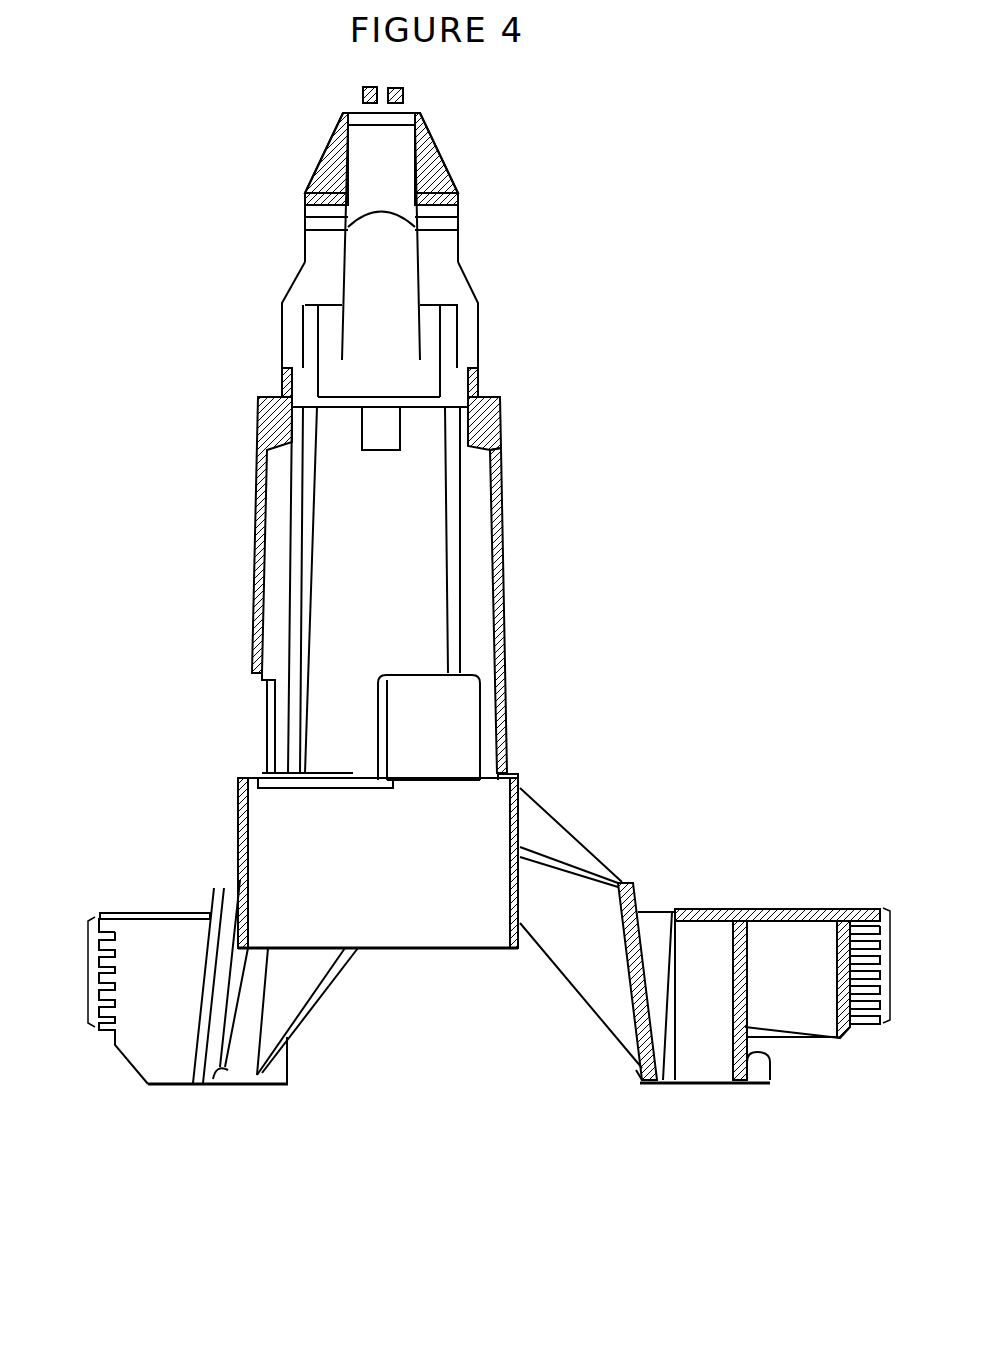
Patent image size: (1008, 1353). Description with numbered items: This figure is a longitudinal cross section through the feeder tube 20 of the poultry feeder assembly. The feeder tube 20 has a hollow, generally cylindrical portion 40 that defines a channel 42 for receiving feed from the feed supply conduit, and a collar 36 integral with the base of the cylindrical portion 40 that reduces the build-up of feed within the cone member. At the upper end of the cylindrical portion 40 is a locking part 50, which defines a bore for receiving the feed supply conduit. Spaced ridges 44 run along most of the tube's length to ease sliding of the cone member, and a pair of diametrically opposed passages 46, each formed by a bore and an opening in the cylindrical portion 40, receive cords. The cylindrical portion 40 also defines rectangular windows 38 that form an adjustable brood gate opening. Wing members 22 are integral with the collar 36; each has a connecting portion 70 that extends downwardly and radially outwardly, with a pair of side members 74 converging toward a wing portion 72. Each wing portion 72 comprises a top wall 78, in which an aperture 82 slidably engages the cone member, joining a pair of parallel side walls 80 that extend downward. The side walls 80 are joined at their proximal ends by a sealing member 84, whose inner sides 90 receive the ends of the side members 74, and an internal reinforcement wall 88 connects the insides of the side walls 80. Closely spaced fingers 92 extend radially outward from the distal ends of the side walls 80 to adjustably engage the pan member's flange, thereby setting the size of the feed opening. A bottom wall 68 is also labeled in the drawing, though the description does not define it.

The feeder tube 20 is at (566, 341).
The wing members 22 is at (182, 910).
The collar 36 is at (506, 950).
The rectangular windows 38 is at (268, 704).
The cylindrical portion 40 is at (389, 570).
The channel 42 is at (495, 548).
The ridges 44 is at (258, 466).
The passages 46 is at (379, 448).
The locking part 50 is at (462, 232).
The bottom wall 68 is at (392, 950).
The connecting portion 70 is at (552, 967).
The wing portion 72 is at (150, 1088).
The side members 74 is at (558, 862).
The top wall 78 is at (122, 913).
The side walls 80 is at (153, 985).
The aperture 82 is at (660, 910).
The sealing member 84 is at (240, 1090).
The internal reinforcement wall 88 is at (743, 957).
The inner sides 90 is at (260, 962).
The fingers 92 is at (87, 970).